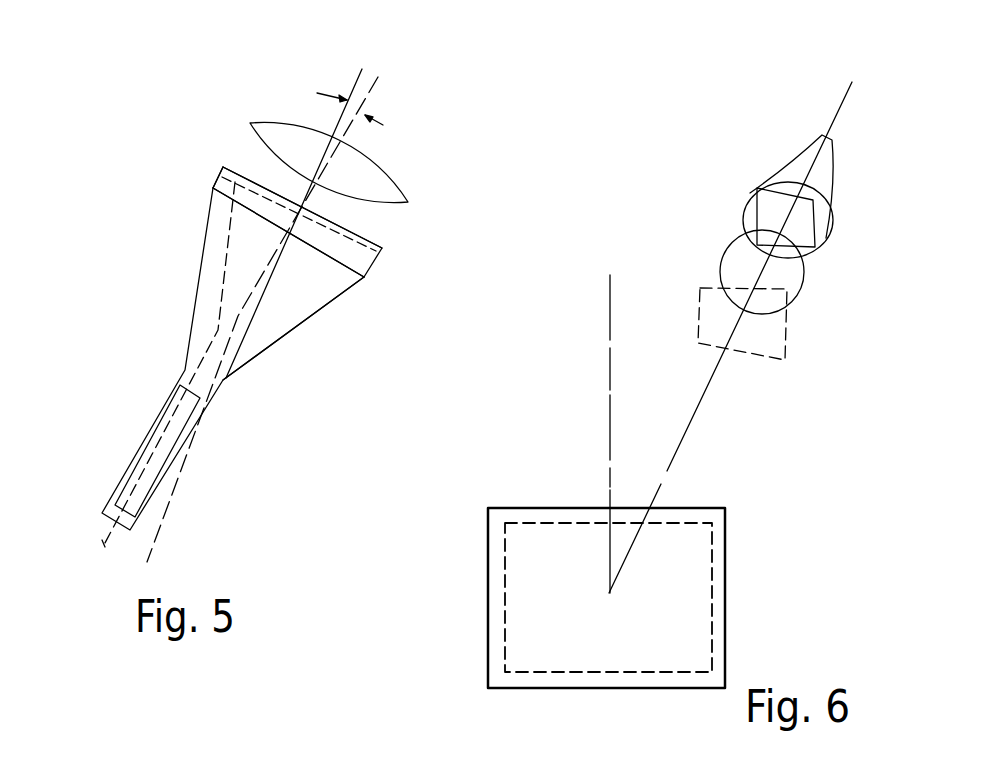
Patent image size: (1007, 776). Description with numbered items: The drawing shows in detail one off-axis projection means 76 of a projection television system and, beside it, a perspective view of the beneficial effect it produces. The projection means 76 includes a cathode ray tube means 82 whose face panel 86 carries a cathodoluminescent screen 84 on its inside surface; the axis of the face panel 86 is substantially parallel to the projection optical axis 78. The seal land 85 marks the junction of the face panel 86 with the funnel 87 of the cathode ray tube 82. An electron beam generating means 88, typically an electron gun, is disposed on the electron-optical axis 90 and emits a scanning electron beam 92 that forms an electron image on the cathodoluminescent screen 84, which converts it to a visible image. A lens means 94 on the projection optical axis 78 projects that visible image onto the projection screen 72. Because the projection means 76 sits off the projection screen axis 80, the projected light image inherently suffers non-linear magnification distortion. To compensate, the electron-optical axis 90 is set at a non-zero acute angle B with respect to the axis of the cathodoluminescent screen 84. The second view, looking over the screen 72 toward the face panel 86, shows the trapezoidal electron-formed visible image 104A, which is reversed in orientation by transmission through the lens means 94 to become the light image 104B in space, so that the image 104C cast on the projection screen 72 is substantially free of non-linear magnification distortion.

In FIG. 5, the projection means 76 is at (157, 130).
In FIG. 6, the projection means 76 is at (903, 122).
In FIG. 5, the projection optical axis 78 is at (362, 70).
In FIG. 5, the acute angle B is at (358, 118).
In FIG. 5, the lens means 94 is at (277, 122).
In FIG. 6, the lens means 94 is at (805, 280).
In FIG. 5, the face panel 86 is at (384, 246).
In FIG. 6, the face panel 86 is at (827, 232).
In FIG. 5, the cathodoluminescent screen 84 is at (213, 188).
In FIG. 5, the seal land 85 is at (343, 267).
In FIG. 5, the cathode ray tube means 82 is at (180, 273).
In FIG. 5, the funnel 87 is at (303, 327).
In FIG. 5, the scanning electron beam 92 is at (225, 313).
In FIG. 5, the electron beam generating means 88 is at (145, 448).
In FIG. 5, the electron-optical axis 90 is at (103, 543).
In FIG. 6, the electron-formed visible image 104A is at (757, 192).
In FIG. 6, the light image 104B is at (787, 362).
In FIG. 6, the image cast on projection screen 104C is at (505, 535).
In FIG. 6, the projection screen axis 80 is at (608, 385).
In FIG. 6, the projection screen 72 is at (488, 577).